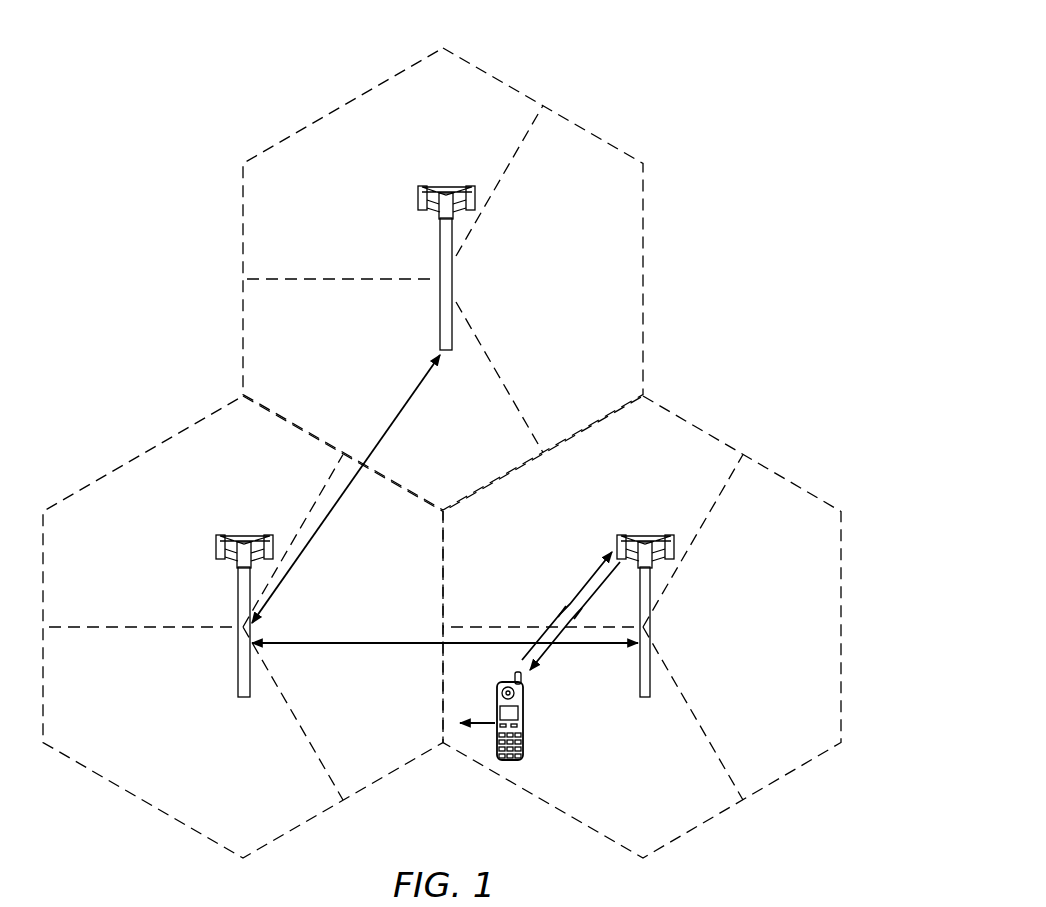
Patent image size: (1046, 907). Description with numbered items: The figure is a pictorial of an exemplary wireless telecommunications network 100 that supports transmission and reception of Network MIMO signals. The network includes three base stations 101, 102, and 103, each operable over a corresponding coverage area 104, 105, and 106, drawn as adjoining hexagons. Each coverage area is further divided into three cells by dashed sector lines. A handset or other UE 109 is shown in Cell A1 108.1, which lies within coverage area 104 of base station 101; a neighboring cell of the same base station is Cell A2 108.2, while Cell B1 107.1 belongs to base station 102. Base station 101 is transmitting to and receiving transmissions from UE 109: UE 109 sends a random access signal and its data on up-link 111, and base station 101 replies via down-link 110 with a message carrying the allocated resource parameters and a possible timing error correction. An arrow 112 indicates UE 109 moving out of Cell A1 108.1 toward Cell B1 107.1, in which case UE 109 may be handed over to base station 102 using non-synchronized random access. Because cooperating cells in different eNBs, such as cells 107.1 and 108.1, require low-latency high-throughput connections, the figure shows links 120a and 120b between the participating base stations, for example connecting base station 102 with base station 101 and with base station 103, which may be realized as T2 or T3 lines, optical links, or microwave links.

The wireless telecommunications network 100 is at (654, 69).
The base station 101 is at (650, 633).
The base station 102 is at (238, 662).
The base station 103 is at (452, 278).
The coverage area 104 is at (773, 772).
The coverage area 105 is at (145, 800).
The coverage area 106 is at (645, 284).
The Cell B1 107.1 is at (325, 628).
The Cell A1 108.1 is at (675, 714).
The Cell A2 108.2 is at (675, 539).
The UE 109 is at (523, 732).
The down-link 110 is at (545, 656).
The up-link 111 is at (585, 586).
The mobile station movement 112 is at (483, 722).
The low-latency high-throughput link 120a is at (367, 645).
The low-latency high-throughput link 120b is at (398, 413).